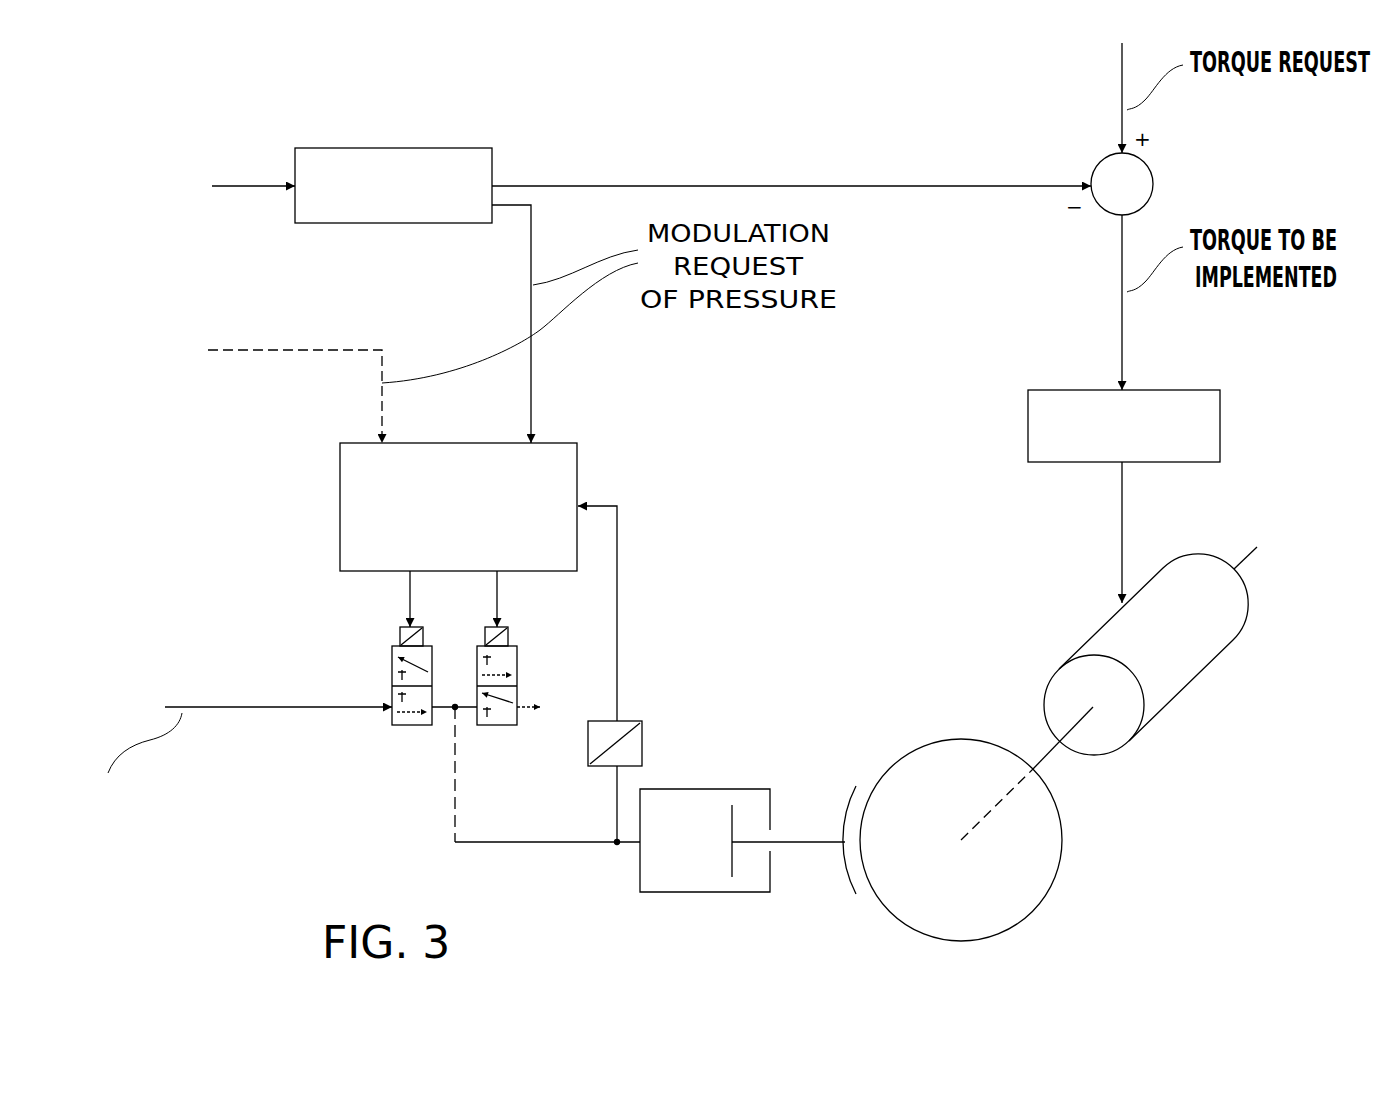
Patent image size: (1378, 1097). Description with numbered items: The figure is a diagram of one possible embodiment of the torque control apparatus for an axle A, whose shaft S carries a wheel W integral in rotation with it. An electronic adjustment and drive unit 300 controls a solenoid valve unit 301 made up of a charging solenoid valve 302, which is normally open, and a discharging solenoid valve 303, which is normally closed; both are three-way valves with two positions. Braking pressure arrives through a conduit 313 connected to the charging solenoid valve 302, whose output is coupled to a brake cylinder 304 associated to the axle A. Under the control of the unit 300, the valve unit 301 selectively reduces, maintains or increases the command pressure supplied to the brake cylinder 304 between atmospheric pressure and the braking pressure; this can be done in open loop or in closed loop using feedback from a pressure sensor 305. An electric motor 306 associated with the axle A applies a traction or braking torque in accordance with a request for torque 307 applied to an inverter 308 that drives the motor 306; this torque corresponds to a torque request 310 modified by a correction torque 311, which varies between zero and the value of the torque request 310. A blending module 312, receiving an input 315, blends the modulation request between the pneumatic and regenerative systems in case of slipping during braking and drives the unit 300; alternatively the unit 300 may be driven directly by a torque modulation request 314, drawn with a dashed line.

The electronic adjustment and drive unit 300 is at (557, 443).
The solenoid valve unit 301 is at (441, 691).
The charging solenoid valve 302 is at (392, 672).
The discharging solenoid valve 303 is at (520, 666).
The brake cylinder 304 is at (655, 893).
The pressure sensor 305 is at (644, 752).
The electric motor 306 is at (1160, 692).
The request for torque 307 is at (1118, 316).
The inverter 308 is at (1027, 430).
The torque request 310 is at (1117, 70).
The correction torque 311 is at (735, 187).
The blending module 312 is at (391, 148).
The conduit 313 is at (228, 707).
The torque modulation request 314 is at (298, 350).
The blending input 315 is at (229, 185).
The axle A is at (980, 725).
The wheel W is at (925, 800).
The shaft S is at (963, 842).